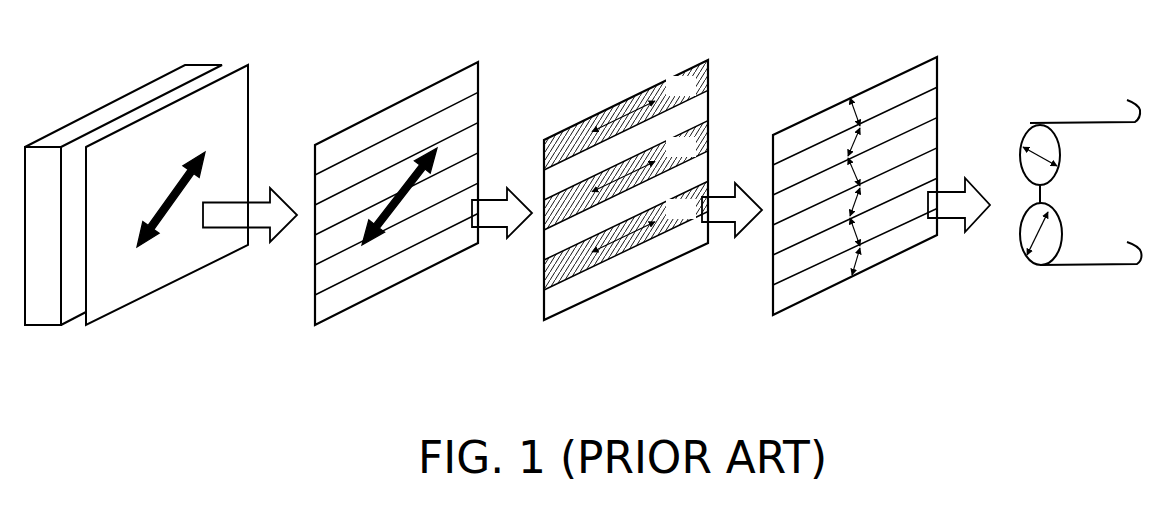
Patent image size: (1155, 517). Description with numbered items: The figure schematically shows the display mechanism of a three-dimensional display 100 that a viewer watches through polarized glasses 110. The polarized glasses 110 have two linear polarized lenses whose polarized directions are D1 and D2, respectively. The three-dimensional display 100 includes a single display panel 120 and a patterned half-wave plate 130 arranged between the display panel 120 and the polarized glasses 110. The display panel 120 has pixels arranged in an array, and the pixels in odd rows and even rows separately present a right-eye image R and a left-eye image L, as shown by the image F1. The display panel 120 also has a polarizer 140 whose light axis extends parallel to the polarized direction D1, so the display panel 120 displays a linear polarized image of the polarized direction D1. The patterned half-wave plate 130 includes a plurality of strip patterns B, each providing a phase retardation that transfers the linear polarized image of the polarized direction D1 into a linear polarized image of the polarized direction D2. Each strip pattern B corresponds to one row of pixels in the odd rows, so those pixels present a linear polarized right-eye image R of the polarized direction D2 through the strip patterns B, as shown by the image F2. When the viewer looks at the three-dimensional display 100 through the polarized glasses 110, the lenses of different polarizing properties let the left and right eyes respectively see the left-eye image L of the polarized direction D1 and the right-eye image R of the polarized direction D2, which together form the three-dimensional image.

The three-dimensional display 100 is at (1060, 355).
The polarized glasses 110 is at (1070, 121).
The display panel 120 is at (250, 40).
The patterned half-wave plate 130 is at (675, 80).
The polarizer 140 is at (232, 108).
The image F1 is at (395, 100).
The image F2 is at (877, 82).
The strip pattern B is at (552, 152).
The polarized direction D1 is at (165, 215).
The polarized direction D2 is at (1043, 158).